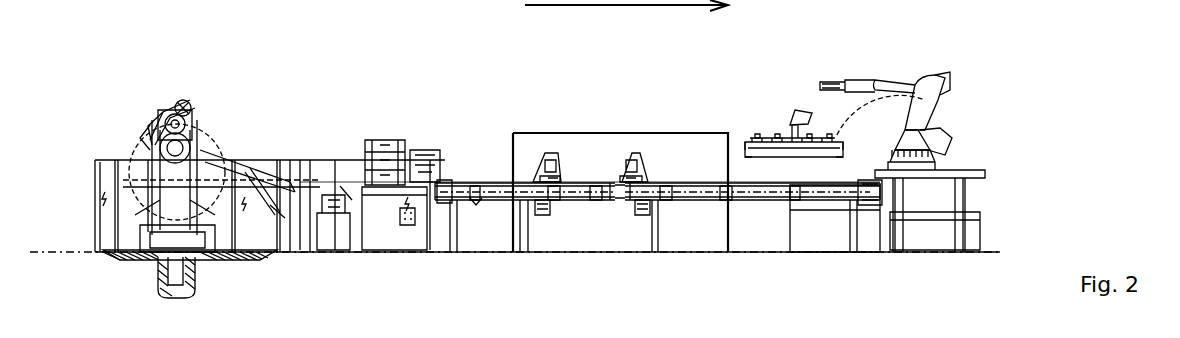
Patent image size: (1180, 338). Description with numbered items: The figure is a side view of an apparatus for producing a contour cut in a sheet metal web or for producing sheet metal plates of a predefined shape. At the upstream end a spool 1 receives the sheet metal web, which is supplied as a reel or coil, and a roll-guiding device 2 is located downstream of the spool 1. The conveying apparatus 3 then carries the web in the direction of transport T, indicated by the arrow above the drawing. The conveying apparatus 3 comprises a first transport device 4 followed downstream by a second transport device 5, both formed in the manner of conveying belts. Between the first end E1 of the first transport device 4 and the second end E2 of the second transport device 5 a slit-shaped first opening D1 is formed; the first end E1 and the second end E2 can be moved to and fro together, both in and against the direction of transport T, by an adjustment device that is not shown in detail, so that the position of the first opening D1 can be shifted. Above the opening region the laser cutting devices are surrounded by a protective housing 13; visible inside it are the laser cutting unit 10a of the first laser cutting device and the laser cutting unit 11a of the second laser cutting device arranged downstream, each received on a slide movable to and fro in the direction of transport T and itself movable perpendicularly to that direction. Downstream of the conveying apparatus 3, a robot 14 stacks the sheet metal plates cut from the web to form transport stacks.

The spool 1 is at (198, 142).
The roll-guiding device 2 is at (396, 140).
The conveying apparatus 3 is at (490, 140).
The first transport device 4 is at (586, 196).
The second transport device 5 is at (733, 196).
The laser cutting unit 10a is at (553, 150).
The laser cutting unit 11a is at (632, 148).
The protective housing 13 is at (693, 146).
The robot 14 is at (897, 126).
The first end E1 is at (615, 192).
The first opening D1 is at (620, 192).
The second end E2 is at (630, 192).
The direction of transport T is at (626, 17).